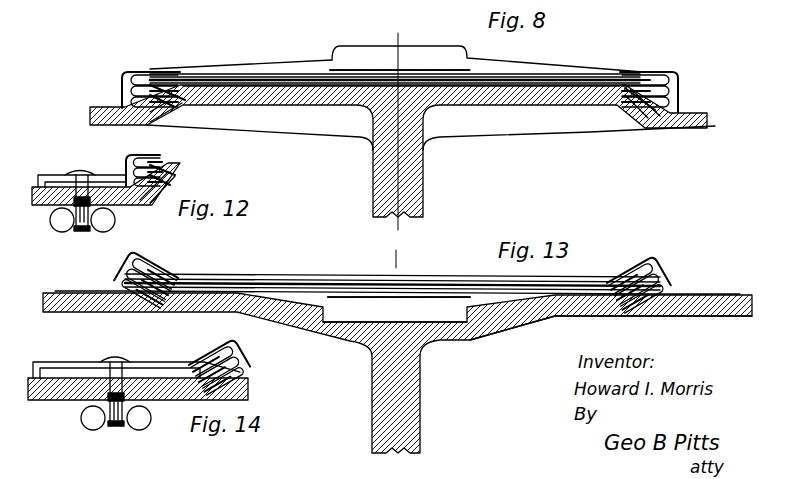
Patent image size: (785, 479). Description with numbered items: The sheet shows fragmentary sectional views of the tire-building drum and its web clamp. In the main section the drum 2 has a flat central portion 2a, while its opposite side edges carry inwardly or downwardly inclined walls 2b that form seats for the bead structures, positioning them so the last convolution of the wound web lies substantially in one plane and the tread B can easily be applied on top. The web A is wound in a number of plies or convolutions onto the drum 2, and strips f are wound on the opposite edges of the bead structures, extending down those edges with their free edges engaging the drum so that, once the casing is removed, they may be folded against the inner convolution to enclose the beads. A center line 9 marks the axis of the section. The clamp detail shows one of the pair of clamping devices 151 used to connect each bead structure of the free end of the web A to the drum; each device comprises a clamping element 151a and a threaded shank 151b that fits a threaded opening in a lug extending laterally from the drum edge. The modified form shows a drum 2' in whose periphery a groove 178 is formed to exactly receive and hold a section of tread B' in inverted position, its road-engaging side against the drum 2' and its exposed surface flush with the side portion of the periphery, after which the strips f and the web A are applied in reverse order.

In FIG. 8, the drum 2 is at (402, 151).
In FIG. 8, the flat central portion of the drum 2a is at (295, 90).
In FIG. 12, the flat central portion of the drum 2a is at (182, 170).
In FIG. 8, the inclined walls of the drum 2b is at (157, 93).
In FIG. 12, the inclined walls of the drum 2b is at (155, 206).
In FIG. 8, the web A is at (243, 76).
In FIG. 12, the web A is at (180, 165).
In FIG. 13, the web A is at (286, 284).
In FIG. 8, the tread B is at (460, 56).
In FIG. 8, the strips f is at (124, 84).
In FIG. 13, the strips f is at (92, 291).
In FIG. 8, the axis line 9 is at (397, 133).
In FIG. 13, the axis line 9 is at (394, 250).
In FIG. 12, the clamping device 151 is at (70, 176).
In FIG. 12, the clamping element 151a is at (108, 179).
In FIG. 14, the clamping element 151a is at (163, 373).
In FIG. 12, the threaded shank 151b is at (78, 231).
In FIG. 14, the threaded shank 151b is at (115, 428).
In FIG. 13, the groove 178 is at (330, 340).
In FIG. 13, the modified drum 2' is at (611, 343).
In FIG. 13, the section of tread B' is at (396, 309).